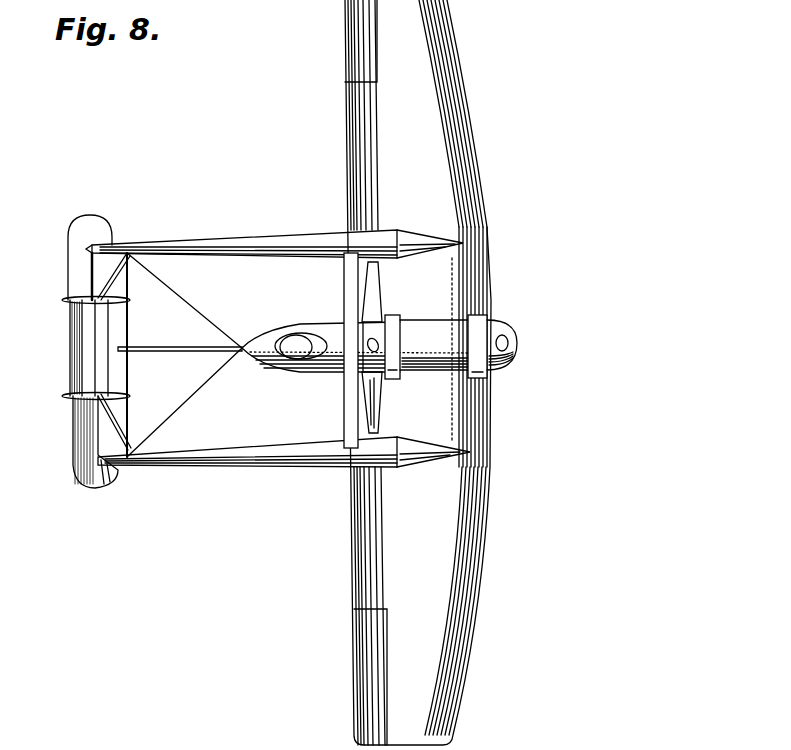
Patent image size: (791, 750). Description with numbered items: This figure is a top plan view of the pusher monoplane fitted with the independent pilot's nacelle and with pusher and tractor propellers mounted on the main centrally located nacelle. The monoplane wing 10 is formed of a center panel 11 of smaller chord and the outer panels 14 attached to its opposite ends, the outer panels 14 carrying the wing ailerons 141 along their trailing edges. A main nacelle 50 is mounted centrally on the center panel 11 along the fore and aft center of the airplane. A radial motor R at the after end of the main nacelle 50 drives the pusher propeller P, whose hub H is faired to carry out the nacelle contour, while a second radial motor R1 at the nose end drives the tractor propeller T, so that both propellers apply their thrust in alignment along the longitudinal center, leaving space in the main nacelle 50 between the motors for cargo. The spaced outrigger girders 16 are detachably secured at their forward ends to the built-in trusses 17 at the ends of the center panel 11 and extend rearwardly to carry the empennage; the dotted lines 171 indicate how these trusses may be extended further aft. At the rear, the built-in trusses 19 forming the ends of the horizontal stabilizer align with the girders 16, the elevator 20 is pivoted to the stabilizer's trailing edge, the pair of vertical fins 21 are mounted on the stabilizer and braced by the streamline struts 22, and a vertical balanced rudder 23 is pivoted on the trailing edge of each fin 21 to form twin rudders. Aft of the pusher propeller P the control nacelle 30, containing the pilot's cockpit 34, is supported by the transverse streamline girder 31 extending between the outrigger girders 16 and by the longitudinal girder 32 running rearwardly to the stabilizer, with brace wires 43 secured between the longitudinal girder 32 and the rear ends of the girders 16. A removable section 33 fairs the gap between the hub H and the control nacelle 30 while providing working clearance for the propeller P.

The monoplane wing 10 is at (348, 584).
The outer panels 14 is at (452, 37).
The ailerons 141 is at (371, 682).
The center panel 11 is at (487, 280).
The outrigger girders 16 is at (241, 243).
The built-in trusses 17 is at (403, 258).
The vertical fins 21 is at (247, 415).
The dotted lines 171 is at (343, 468).
The elevator 20 is at (103, 233).
The built-in trusses 19 is at (118, 244).
The streamline struts 22 is at (112, 279).
The vertical balanced rudder 23 is at (65, 395).
The brace wires 43 is at (180, 297).
The longitudinal girder 32 is at (185, 347).
The control nacelle 30 is at (272, 333).
The control cockpit 34 is at (295, 354).
The removable section 33 is at (358, 338).
The transverse streamline girder 31 is at (344, 285).
The pusher propeller P is at (373, 265).
The hub H is at (375, 333).
The motor R is at (394, 376).
The main nacelle 50 is at (452, 333).
The motor R1 is at (480, 378).
The tractor propeller T is at (508, 347).